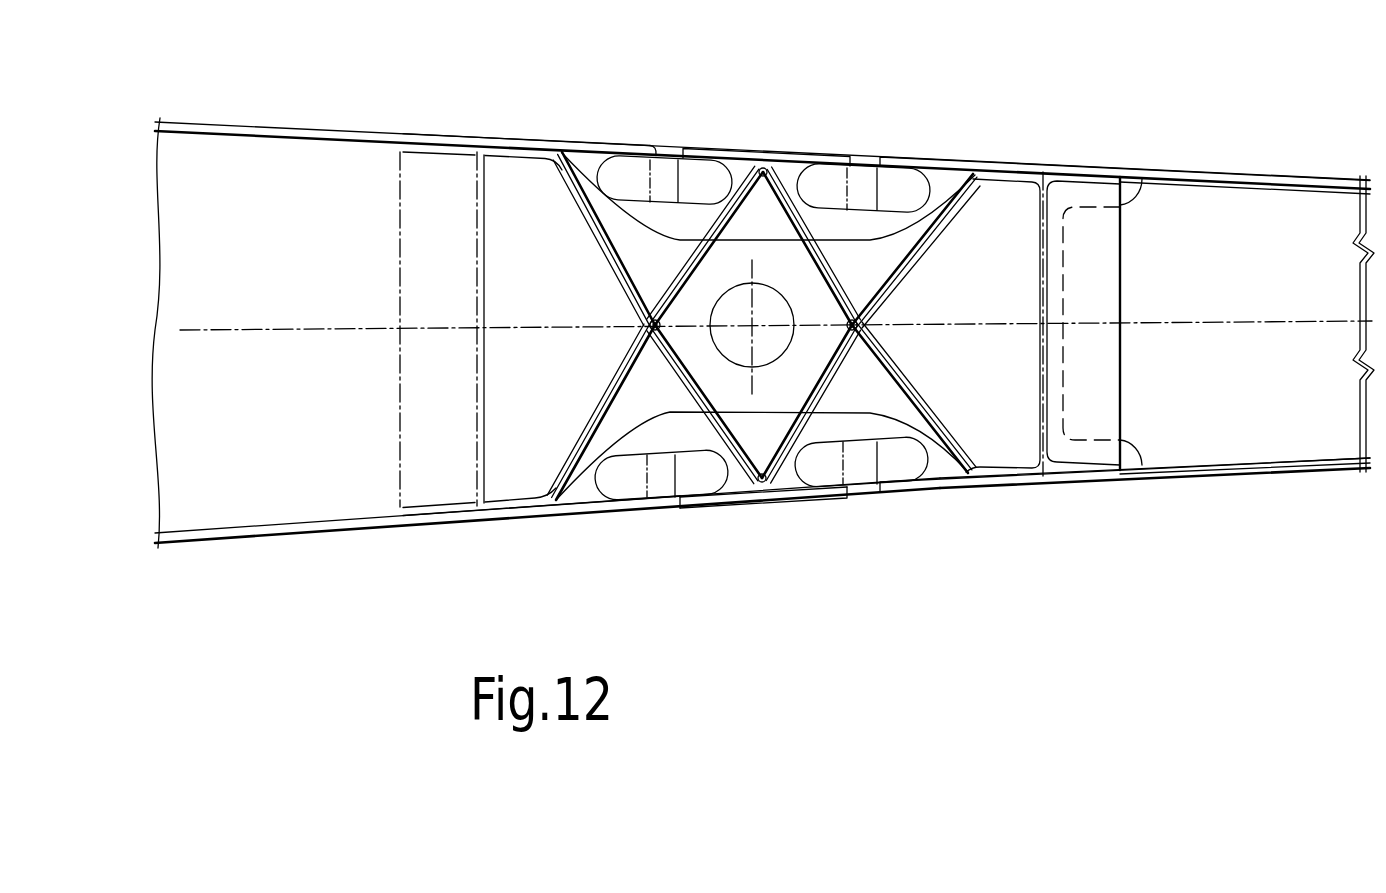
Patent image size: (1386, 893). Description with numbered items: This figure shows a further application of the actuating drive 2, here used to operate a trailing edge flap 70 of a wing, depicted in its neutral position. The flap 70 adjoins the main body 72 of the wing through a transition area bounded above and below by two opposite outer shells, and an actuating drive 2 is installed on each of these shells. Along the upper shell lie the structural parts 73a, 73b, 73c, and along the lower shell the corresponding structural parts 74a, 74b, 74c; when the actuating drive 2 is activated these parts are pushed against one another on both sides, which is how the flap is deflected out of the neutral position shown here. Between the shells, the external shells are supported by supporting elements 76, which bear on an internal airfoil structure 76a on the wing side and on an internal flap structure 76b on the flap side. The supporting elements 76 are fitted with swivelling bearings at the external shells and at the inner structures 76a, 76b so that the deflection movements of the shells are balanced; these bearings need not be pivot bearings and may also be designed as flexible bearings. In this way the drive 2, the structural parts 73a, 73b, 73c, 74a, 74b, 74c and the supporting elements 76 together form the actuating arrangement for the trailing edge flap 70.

The trailing edge flap 70 is at (1180, 168).
The main body of the wing 72 is at (345, 115).
The structural part 73a is at (585, 142).
The structural part 73b is at (712, 150).
The structural part 73c is at (920, 162).
The structural part 74a is at (598, 513).
The structural part 74b is at (742, 497).
The structural part 74c is at (930, 482).
The supporting elements 76 is at (708, 265).
The internal airfoil structure 76a is at (596, 243).
The internal flap structure 76b is at (940, 235).
The actuating drive 2 is at (827, 180).